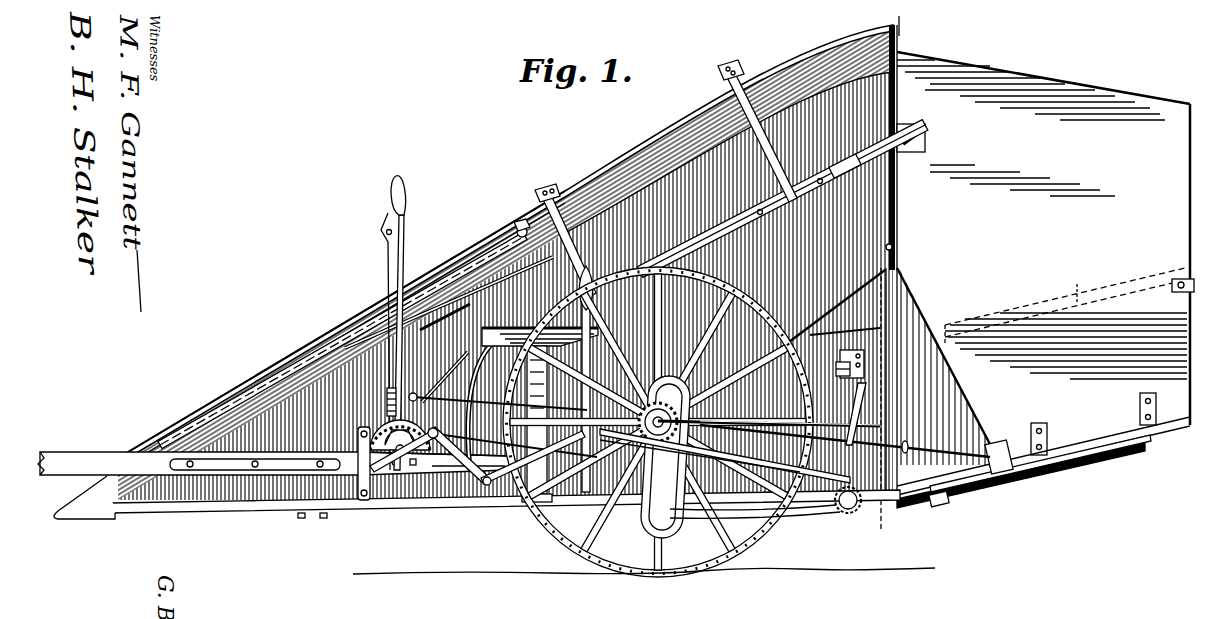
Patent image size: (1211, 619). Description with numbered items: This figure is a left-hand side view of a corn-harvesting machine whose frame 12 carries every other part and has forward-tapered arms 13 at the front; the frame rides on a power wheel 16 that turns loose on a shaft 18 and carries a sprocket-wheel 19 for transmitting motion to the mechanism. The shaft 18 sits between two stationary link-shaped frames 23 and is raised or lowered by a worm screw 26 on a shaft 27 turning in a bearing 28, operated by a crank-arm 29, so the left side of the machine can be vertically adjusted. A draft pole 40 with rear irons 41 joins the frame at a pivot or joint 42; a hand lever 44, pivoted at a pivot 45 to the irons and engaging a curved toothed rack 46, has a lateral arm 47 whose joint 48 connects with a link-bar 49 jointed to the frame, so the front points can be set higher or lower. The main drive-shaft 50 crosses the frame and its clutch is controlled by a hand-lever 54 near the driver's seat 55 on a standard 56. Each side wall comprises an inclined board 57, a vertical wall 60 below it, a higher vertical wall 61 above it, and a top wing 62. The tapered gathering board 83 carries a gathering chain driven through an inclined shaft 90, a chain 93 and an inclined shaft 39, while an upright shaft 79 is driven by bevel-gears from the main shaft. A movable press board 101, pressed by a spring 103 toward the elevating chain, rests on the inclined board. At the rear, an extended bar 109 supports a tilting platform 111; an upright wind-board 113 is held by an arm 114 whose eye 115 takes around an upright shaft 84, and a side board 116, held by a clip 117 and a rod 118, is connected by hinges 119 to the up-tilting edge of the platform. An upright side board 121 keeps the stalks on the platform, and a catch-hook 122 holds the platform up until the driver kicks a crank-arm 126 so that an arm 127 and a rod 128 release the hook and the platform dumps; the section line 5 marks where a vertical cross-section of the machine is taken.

The section line 5 is at (932, 42).
The frame 12 is at (382, 500).
The forward-tapered arms 13 is at (211, 513).
The power wheel 16 is at (556, 541).
The shaft 18 is at (678, 418).
The sprocket-wheel 19 is at (745, 402).
The link-shaped frames 23 is at (700, 512).
The worm screw 26 is at (645, 500).
The shaft 27 is at (690, 438).
The bearing 28 is at (787, 424).
The crank-arm 29 is at (850, 402).
The inclined shaft 39 is at (445, 318).
The draft pole 40 is at (274, 463).
The irons 41 is at (460, 479).
The pivot or joint 42 is at (480, 492).
The hand lever 44 is at (406, 194).
The pivot 45 is at (400, 456).
The toothed rack 46 is at (455, 414).
The lateral arm 47 is at (308, 343).
The joint 48 is at (272, 376).
The link-bar 49 is at (345, 505).
The main drive-shaft 50 is at (846, 514).
The hand-lever 54 is at (620, 268).
The driver's seat 55 is at (526, 330).
The standard 56 is at (462, 439).
The board 57 is at (887, 185).
The vertical wall 60 is at (505, 262).
The vertical wall 61 is at (757, 131).
The wing 62 is at (702, 80).
The upright shaft 79 is at (537, 424).
The gathering board 83 is at (233, 401).
The upright shaft 84 is at (845, 340).
The inclined shaft 90 is at (527, 263).
The chain 93 is at (449, 302).
The movable press board 101 is at (715, 236).
The spring 103 is at (762, 218).
The extended bar 109 is at (1060, 470).
The platform 111 is at (1115, 456).
The wind-board 113 is at (1060, 95).
The arm 114 is at (866, 350).
The eye 115 is at (840, 365).
The side board 116 is at (1066, 346).
The clip 117 is at (1176, 283).
The rod 118 is at (1065, 303).
The hinges 119 is at (1052, 430).
The upright side board 121 is at (975, 402).
The catch-hook 122 is at (1000, 476).
The crank-arm 126 is at (440, 502).
The arm 127 is at (448, 370).
The rod 128 is at (946, 506).